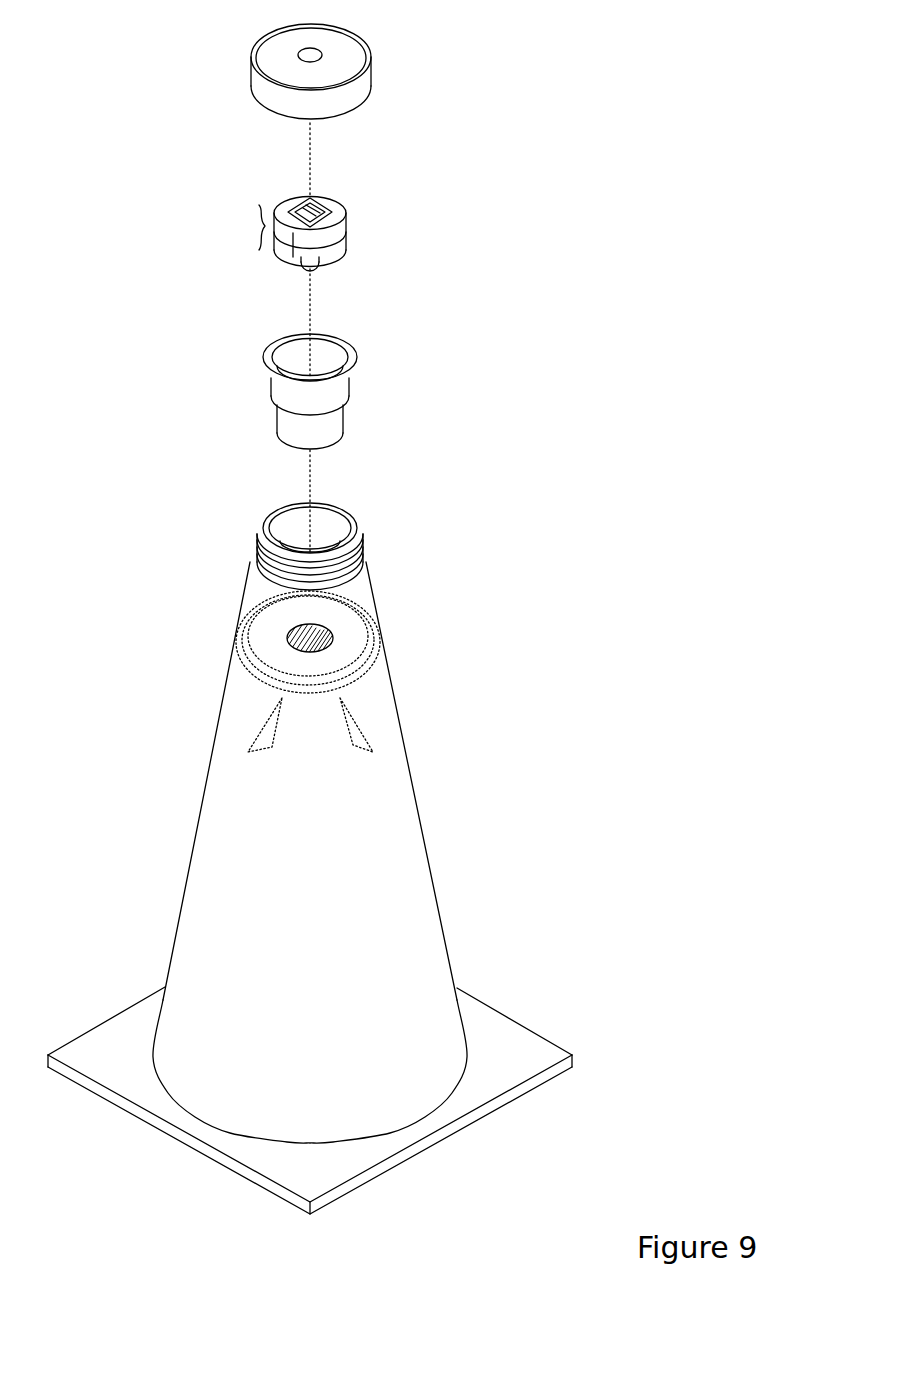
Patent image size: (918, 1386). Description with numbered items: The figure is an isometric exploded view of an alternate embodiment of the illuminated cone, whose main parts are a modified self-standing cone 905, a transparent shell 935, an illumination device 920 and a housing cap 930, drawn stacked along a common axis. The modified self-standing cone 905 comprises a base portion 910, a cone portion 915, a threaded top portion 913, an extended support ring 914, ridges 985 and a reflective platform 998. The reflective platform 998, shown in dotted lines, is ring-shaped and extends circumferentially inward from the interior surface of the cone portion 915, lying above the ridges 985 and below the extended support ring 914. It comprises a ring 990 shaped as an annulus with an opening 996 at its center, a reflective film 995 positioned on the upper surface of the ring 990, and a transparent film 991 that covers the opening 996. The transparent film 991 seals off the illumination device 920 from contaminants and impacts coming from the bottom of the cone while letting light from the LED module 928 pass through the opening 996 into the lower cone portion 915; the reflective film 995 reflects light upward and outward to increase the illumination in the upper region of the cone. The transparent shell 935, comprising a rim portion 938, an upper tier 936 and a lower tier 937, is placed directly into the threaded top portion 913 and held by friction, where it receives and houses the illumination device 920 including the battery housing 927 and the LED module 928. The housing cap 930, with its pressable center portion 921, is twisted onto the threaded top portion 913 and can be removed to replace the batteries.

The modified self-standing cone 905 is at (342, 856).
The base portion 910 is at (117, 1100).
The threaded top portion 913 is at (303, 544).
The extended support ring 914 is at (332, 540).
The cone portion 915 is at (210, 776).
The illumination device 920 is at (362, 245).
The pressable center portion 921 is at (298, 55).
The battery housing 927 is at (241, 227).
The LED module 928 is at (300, 263).
The housing cap 930 is at (359, 65).
The transparent shell 935 is at (354, 387).
The upper tier 936 is at (275, 388).
The lower tier 937 is at (282, 428).
The rim portion 938 is at (352, 349).
The ridges 985 is at (367, 723).
The ring 990 is at (357, 677).
The transparent film 991 is at (297, 638).
The reflective film 995 is at (350, 645).
The opening 996 is at (327, 623).
The reflective platform 998 is at (280, 656).